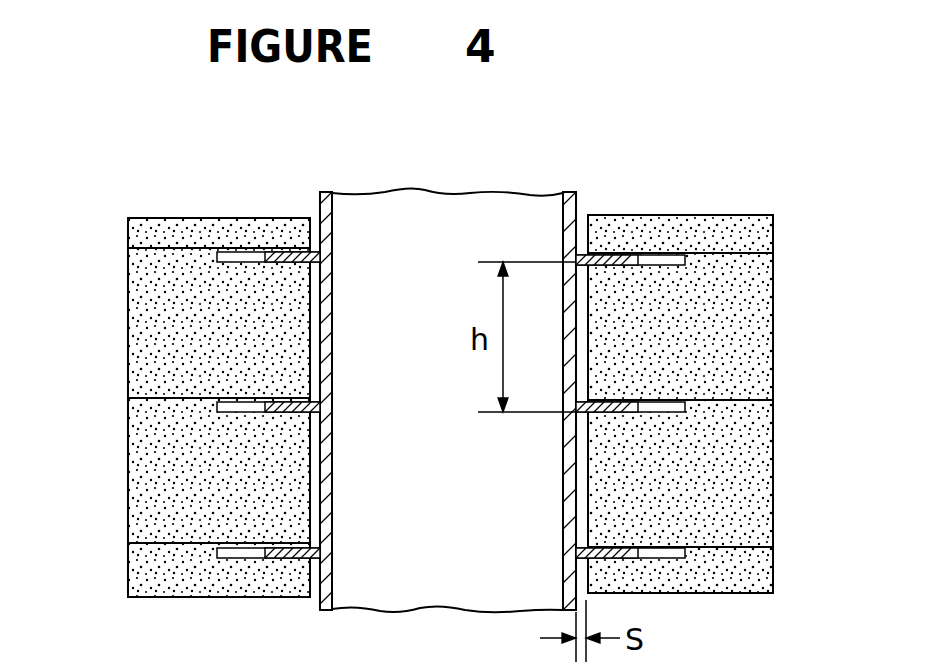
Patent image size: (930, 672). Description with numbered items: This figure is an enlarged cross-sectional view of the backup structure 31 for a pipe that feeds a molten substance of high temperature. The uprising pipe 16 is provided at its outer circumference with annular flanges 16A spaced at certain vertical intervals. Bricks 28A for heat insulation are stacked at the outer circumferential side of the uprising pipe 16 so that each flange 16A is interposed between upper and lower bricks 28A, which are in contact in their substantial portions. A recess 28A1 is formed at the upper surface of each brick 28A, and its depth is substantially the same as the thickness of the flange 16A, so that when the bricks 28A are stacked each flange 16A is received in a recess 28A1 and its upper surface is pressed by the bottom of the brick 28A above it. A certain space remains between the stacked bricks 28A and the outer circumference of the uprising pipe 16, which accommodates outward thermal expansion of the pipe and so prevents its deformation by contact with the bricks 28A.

The uprising pipe 16 is at (333, 237).
The flange 16A is at (285, 248).
The brick 28A is at (128, 229).
The recess 28A1 is at (232, 255).
The backup structure 31 is at (776, 345).